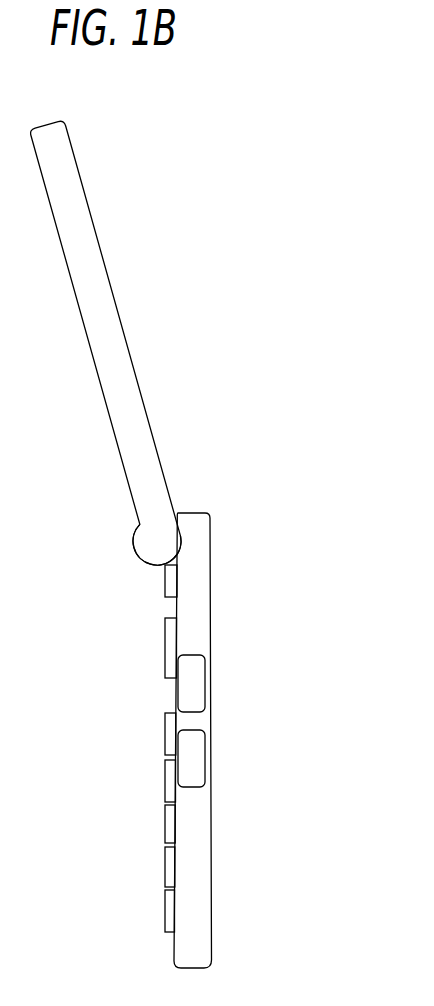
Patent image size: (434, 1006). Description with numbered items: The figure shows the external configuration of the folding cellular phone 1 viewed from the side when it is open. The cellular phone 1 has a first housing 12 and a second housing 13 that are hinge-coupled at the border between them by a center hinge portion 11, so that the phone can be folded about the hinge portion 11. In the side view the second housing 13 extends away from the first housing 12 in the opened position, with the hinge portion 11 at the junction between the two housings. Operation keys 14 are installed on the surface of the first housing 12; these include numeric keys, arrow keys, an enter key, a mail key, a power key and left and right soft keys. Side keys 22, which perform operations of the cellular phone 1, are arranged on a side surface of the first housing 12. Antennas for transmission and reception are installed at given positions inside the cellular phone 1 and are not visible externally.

The cellular phone 1 is at (240, 788).
The hinge portion 11 is at (150, 541).
The first housing 12 is at (211, 615).
The second housing 13 is at (123, 330).
The operation keys 14 is at (152, 583).
The side keys 22 is at (196, 684).